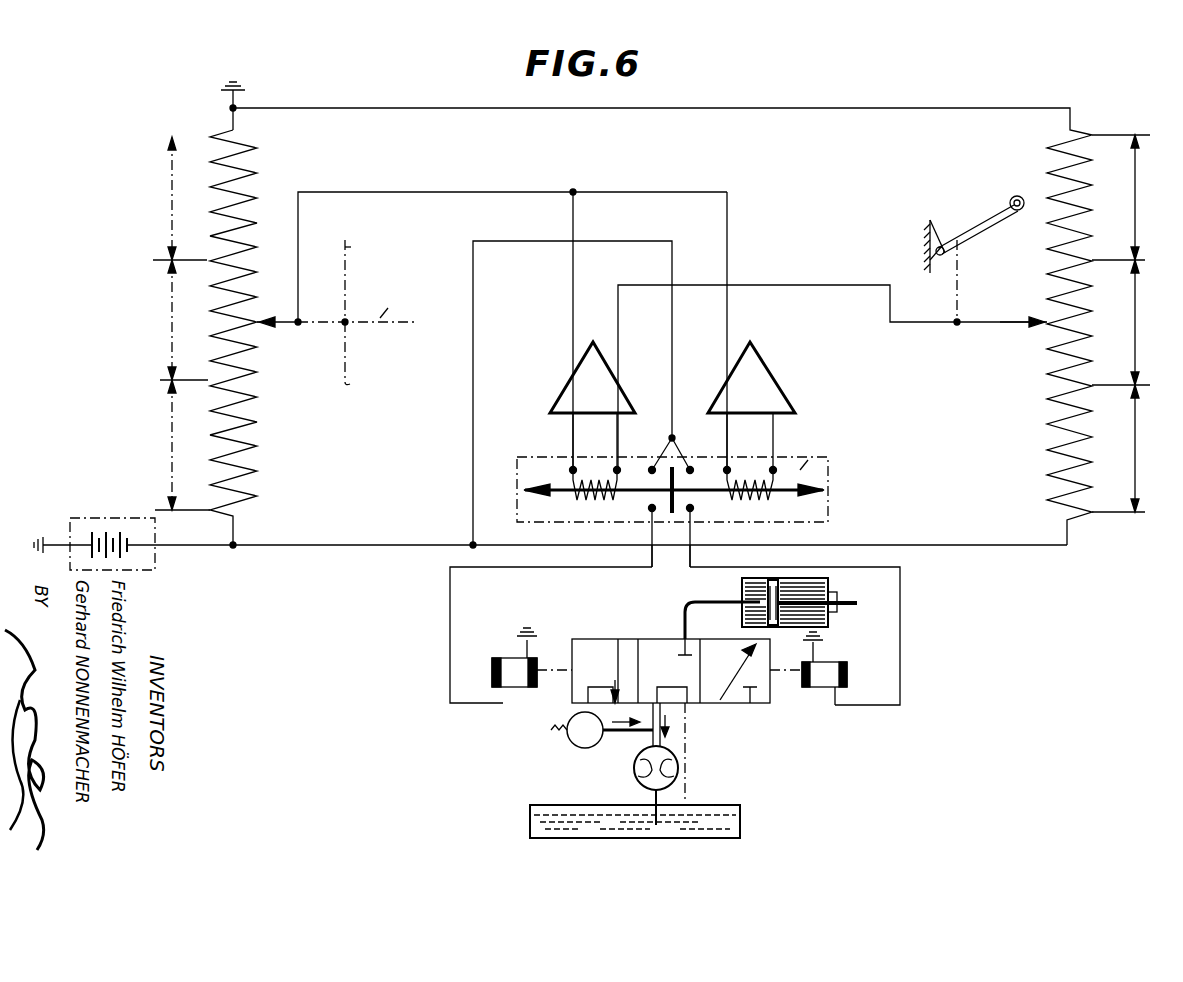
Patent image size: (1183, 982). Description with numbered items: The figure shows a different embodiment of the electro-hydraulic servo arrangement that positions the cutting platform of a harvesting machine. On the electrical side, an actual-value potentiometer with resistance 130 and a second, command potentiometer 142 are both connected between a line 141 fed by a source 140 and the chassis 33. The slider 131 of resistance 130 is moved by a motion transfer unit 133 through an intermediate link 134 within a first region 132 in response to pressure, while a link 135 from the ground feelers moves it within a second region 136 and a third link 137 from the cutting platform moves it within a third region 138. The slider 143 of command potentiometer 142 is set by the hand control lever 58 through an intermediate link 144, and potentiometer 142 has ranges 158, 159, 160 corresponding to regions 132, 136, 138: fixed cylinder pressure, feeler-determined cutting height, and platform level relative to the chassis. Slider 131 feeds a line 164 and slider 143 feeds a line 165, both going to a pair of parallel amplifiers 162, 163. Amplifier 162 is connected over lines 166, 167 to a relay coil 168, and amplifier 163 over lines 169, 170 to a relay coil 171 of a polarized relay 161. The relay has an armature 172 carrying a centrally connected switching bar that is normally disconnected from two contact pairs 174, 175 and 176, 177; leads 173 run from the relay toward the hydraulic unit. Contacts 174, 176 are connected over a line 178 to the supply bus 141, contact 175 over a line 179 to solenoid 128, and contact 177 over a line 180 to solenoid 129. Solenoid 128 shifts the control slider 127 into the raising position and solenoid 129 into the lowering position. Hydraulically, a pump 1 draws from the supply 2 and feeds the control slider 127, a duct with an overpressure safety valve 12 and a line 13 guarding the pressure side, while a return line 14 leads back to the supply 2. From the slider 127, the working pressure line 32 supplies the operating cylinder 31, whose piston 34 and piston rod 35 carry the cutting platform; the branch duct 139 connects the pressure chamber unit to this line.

The branch duct 139 is at (870, 112).
The resistance 130 is at (250, 197).
The third region 138 is at (178, 198).
The second region 136 is at (179, 320).
The first region 132 is at (180, 445).
The slider 131 is at (283, 321).
The line 164 is at (493, 176).
The intermediate link 134 is at (351, 337).
The third link 137 is at (352, 246).
The motion transfer unit 133 is at (350, 378).
The link 135 is at (388, 310).
The line 178 is at (628, 242).
The line 165 is at (856, 286).
The slider 143 is at (1010, 324).
The intermediate link 144 is at (968, 274).
The chassis 33 is at (917, 229).
The hand control lever 58 is at (971, 222).
The second potentiometer 142 is at (1048, 402).
The final region 160 is at (1123, 197).
The control region 159 is at (1123, 322).
The resistance range 158 is at (1121, 448).
The amplifier 162 is at (566, 382).
The amplifier 163 is at (783, 384).
The polarized relay 161 is at (509, 471).
The line 166 is at (570, 431).
The line 167 is at (618, 441).
The contact 174 is at (648, 454).
The contact 176 is at (700, 445).
The line 169 is at (727, 428).
The line 170 is at (784, 430).
The armature 172 is at (811, 458).
The relay coil 168 is at (576, 498).
The relay coil 171 is at (765, 500).
The contact 175 is at (650, 508).
The contact 177 is at (692, 508).
The output leads 173 is at (670, 558).
The line 141 is at (298, 548).
The source 140 is at (112, 518).
The line 179 is at (504, 568).
The line 180 is at (904, 602).
The magnetic control coil 128 is at (506, 658).
The control slider 127 is at (604, 634).
The working pressure line 32 is at (682, 618).
The piston rod 35 is at (849, 597).
The piston 34 is at (774, 628).
The operating cylinder 31 is at (734, 616).
The magnetic control coil 129 is at (830, 656).
The pump 1 is at (698, 786).
The supply 2 is at (530, 816).
The pressure line 13 is at (626, 738).
The overpressure safety valve 12 is at (560, 744).
The return line 14 is at (704, 726).